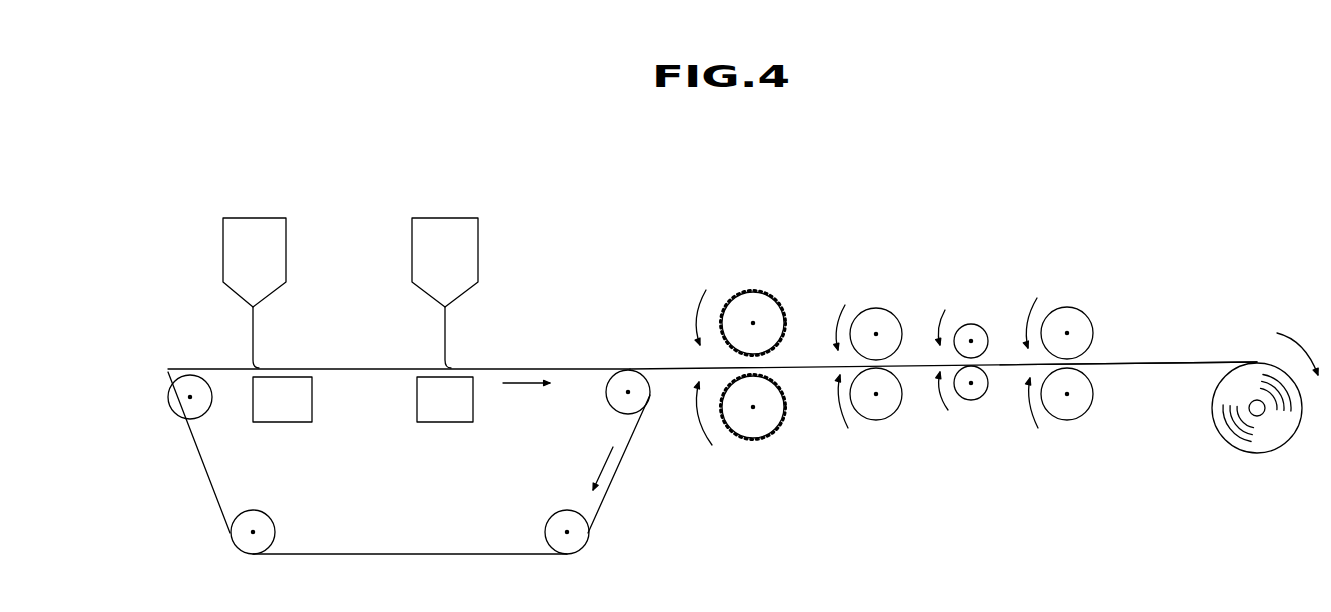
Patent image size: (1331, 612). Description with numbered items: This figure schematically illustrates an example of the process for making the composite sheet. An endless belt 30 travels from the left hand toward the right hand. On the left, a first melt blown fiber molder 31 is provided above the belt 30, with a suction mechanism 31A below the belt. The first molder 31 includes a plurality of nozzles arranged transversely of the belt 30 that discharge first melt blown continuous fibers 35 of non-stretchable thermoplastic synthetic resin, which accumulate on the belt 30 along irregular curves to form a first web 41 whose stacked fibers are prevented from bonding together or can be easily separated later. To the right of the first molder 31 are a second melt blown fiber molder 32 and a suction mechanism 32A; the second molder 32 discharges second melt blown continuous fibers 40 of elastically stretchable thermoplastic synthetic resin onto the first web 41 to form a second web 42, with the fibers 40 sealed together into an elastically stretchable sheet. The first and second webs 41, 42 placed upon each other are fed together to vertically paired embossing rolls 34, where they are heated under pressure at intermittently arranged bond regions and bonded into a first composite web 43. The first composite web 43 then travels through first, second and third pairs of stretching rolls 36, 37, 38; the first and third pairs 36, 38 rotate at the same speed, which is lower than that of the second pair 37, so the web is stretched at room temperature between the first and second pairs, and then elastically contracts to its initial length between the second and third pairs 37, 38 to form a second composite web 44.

The endless belt 30 is at (203, 483).
The first melt blown fiber molder 31 is at (226, 216).
The suction mechanism 31A is at (297, 422).
The second melt blown fiber molder 32 is at (414, 216).
The suction mechanism 32A is at (453, 422).
The embossing rolls 34 is at (760, 290).
The first melt blown continuous fibers 35 is at (250, 325).
The first pair of stretching rolls 36 is at (878, 307).
The second pair of stretching rolls 37 is at (975, 323).
The third pair of stretching rolls 38 is at (1075, 307).
The second melt blown continuous fibers 40 is at (443, 328).
The first web 41 is at (320, 366).
The second web 42 is at (508, 366).
The first composite web 43 is at (806, 371).
The second composite web 44 is at (1138, 366).